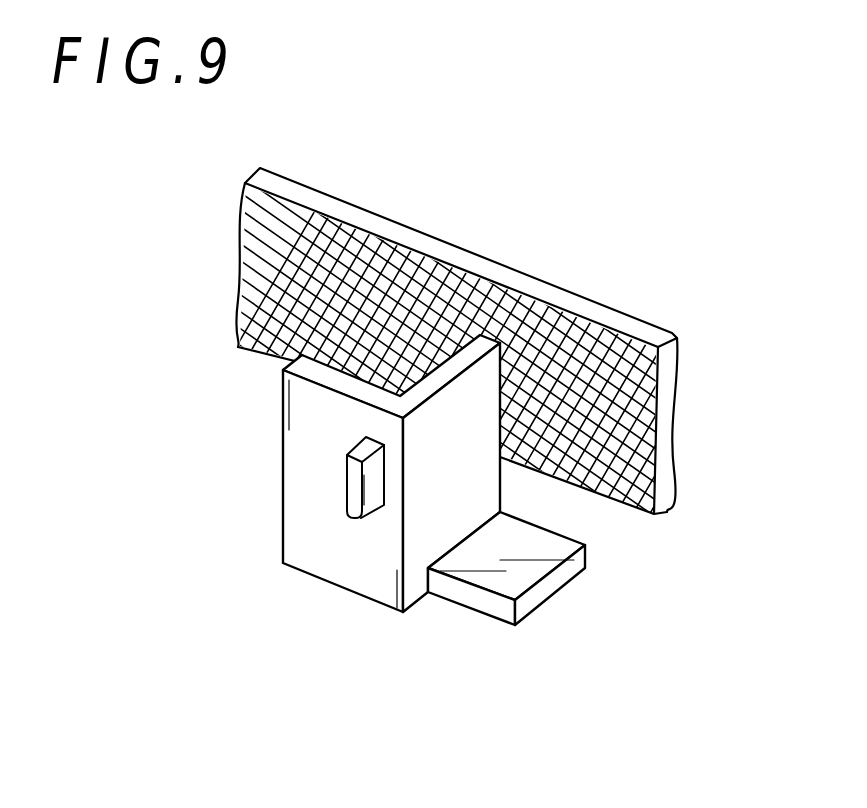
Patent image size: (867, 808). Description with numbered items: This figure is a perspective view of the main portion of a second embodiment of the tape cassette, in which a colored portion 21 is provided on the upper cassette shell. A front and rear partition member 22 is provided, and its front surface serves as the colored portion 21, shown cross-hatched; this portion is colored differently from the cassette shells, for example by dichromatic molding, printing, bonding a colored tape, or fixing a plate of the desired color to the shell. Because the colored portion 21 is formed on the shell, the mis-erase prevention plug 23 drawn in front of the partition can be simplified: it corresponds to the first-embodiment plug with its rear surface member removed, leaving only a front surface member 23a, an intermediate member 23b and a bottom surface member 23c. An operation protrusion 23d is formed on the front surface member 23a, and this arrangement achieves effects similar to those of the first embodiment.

The colored portion 21 is at (588, 350).
The front and rear partition member 22 is at (421, 233).
The mis-erase prevention plug 23 is at (431, 516).
The front surface member 23a is at (285, 453).
The intermediate member 23b is at (500, 484).
The bottom surface member 23c is at (556, 591).
The operation protrusion 23d is at (350, 487).